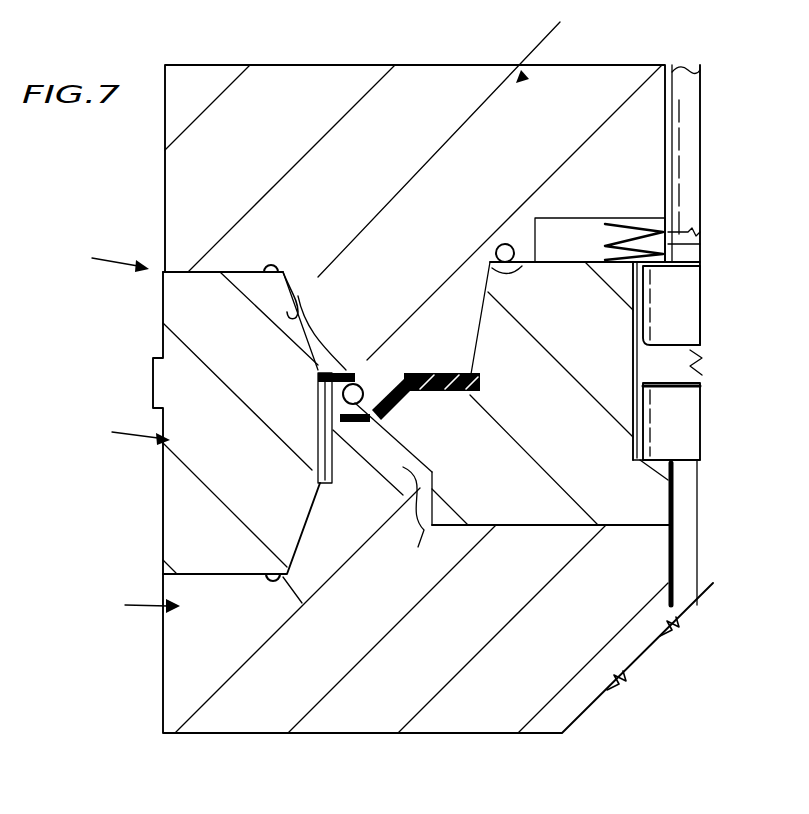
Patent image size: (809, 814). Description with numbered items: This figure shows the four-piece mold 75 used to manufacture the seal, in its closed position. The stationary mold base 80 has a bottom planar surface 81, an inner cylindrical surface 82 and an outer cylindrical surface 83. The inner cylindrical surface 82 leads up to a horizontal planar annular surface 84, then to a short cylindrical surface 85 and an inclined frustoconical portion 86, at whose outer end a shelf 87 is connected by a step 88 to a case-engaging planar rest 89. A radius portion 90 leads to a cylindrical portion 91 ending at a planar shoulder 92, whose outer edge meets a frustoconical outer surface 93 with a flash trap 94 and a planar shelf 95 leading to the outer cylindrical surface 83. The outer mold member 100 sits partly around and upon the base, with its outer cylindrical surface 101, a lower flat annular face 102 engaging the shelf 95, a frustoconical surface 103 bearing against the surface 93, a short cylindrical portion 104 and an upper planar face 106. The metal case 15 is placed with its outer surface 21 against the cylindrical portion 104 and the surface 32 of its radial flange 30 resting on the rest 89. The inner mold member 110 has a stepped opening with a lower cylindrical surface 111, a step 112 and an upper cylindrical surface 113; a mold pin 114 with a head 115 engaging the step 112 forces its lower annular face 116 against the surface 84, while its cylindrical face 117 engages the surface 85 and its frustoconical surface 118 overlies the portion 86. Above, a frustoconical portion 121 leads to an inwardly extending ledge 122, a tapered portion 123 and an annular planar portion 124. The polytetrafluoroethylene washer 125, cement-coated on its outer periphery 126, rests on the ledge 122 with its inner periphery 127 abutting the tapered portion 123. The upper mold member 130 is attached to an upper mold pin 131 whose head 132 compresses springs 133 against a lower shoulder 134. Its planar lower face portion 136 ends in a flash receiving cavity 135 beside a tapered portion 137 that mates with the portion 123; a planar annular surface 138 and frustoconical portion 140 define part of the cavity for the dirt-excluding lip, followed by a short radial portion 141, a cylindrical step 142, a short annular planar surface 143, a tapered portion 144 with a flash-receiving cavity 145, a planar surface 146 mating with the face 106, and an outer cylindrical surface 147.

The metal case 15 is at (318, 430).
The outer surface 21 is at (318, 383).
The radial flange 30 is at (356, 384).
The surface 32 is at (342, 428).
The four-piece mold 75 is at (102, 258).
The stationary mold base 80 is at (398, 610).
The bottom planar surface 81 is at (402, 733).
The inner cylindrical surface 82 is at (666, 564).
The outer cylindrical surface 83 is at (162, 660).
The horizontal planar annular surface 84 is at (622, 524).
The short cylindrical surface 85 is at (436, 490).
The inclined frustoconical portion 86 is at (428, 456).
The shelf 87 is at (396, 370).
The step 88 is at (398, 470).
The case-engaging planar rest 89 is at (362, 436).
The radius portion 90 is at (318, 405).
The cylindrical portion 91 is at (318, 470).
The planar shoulder 92 is at (322, 482).
The frustoconical outer surface 93 is at (304, 528).
The flash trap 94 is at (311, 600).
The planar shelf 95 is at (236, 575).
The outer mold member 100 is at (195, 423).
The outer cylindrical surface 101 is at (160, 500).
The lower flat annular face 102 is at (268, 585).
The frustoconical surface 103 is at (288, 545).
The short cylindrical portion 104 is at (318, 375).
The upper planar face 106 is at (208, 272).
The inner mold member 110 is at (618, 388).
The lower cylindrical surface 111 is at (676, 512).
The step 112 is at (676, 462).
The upper cylindrical surface 113 is at (634, 370).
The mold pin 114 is at (690, 554).
The head 115 is at (690, 420).
The lower annular face 116 is at (500, 525).
The cylindrical face 117 is at (425, 525).
The frustoconical surface 118 is at (416, 500).
The frustoconical portion 121 is at (418, 398).
The inwardly extending ledge 122 is at (478, 402).
The tapered portion 123 is at (490, 290).
The annular planar portion 124 is at (600, 252).
The polytetrafluoroethylene washer 125 is at (465, 376).
The outer periphery 126 is at (414, 408).
The inner periphery 127 is at (472, 392).
The upper mold member 130 is at (418, 185).
The upper mold pin 131 is at (702, 142).
The head 132 is at (680, 300).
The springs 133 is at (688, 234).
The lower shoulder 134 is at (608, 224).
The flash receiving cavity 135 is at (516, 252).
The planar lower face portion 136 is at (497, 250).
The tapered portion 137 is at (505, 270).
The planar annular surface 138 is at (480, 347).
The frustoconical portion 140 is at (404, 374).
The short radial portion 141 is at (370, 365).
The cylindrical step 142 is at (304, 330).
The short annular planar surface 143 is at (278, 336).
The tapered portion 144 is at (299, 296).
The flash-receiving cavity 145 is at (274, 264).
The planar surface 146 is at (165, 298).
The outer cylindrical surface 147 is at (165, 200).